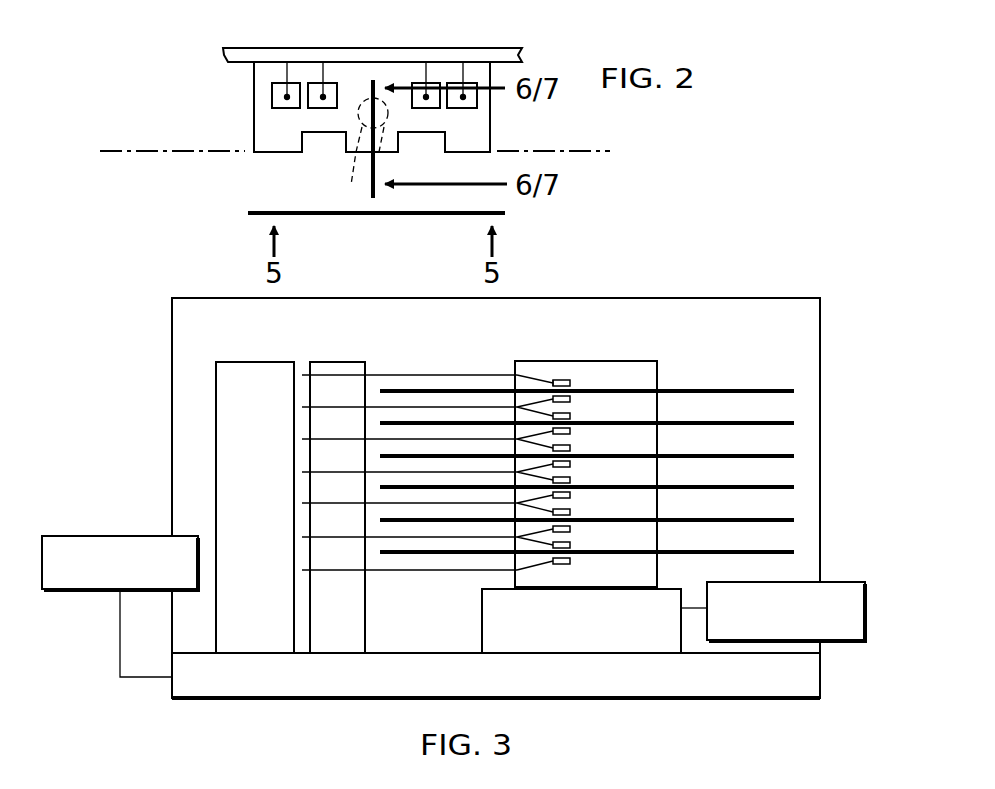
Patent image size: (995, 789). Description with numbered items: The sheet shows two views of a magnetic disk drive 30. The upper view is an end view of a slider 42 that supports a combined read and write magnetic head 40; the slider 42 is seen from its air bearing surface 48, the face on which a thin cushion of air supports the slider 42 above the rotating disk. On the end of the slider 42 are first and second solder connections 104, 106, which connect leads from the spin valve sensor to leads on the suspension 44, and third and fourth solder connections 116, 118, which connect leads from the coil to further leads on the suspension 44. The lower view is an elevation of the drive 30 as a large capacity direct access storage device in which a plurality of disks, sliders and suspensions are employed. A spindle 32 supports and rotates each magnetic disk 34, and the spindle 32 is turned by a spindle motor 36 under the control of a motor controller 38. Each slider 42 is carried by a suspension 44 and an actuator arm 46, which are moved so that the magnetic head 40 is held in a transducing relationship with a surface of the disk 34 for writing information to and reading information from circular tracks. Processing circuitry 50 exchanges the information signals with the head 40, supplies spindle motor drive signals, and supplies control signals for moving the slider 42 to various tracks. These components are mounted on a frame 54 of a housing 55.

In FIG. 3, the magnetic disk drive 30 is at (715, 353).
In FIG. 3, the spindle 32 is at (639, 361).
In FIG. 3, the magnetic disk 34 is at (770, 393).
In FIG. 3, the spindle motor 36 is at (594, 621).
In FIG. 3, the motor controller 38 is at (853, 641).
In FIG. 2, the magnetic head 40 is at (352, 185).
In FIG. 2, the slider 42 is at (254, 92).
In FIG. 3, the slider 42 is at (570, 383).
In FIG. 3, the suspension 44 is at (550, 383).
In FIG. 3, the actuator arm 46 is at (467, 407).
In FIG. 2, the air bearing surface 48 is at (151, 152).
In FIG. 3, the processing circuitry 50 is at (98, 535).
In FIG. 3, the frame 54 is at (290, 700).
In FIG. 3, the housing 55 is at (668, 297).
In FIG. 2, the first solder connection 104 is at (272, 85).
In FIG. 2, the second solder connection 106 is at (446, 84).
In FIG. 2, the third solder connection 116 is at (304, 104).
In FIG. 2, the fourth solder connection 118 is at (410, 84).